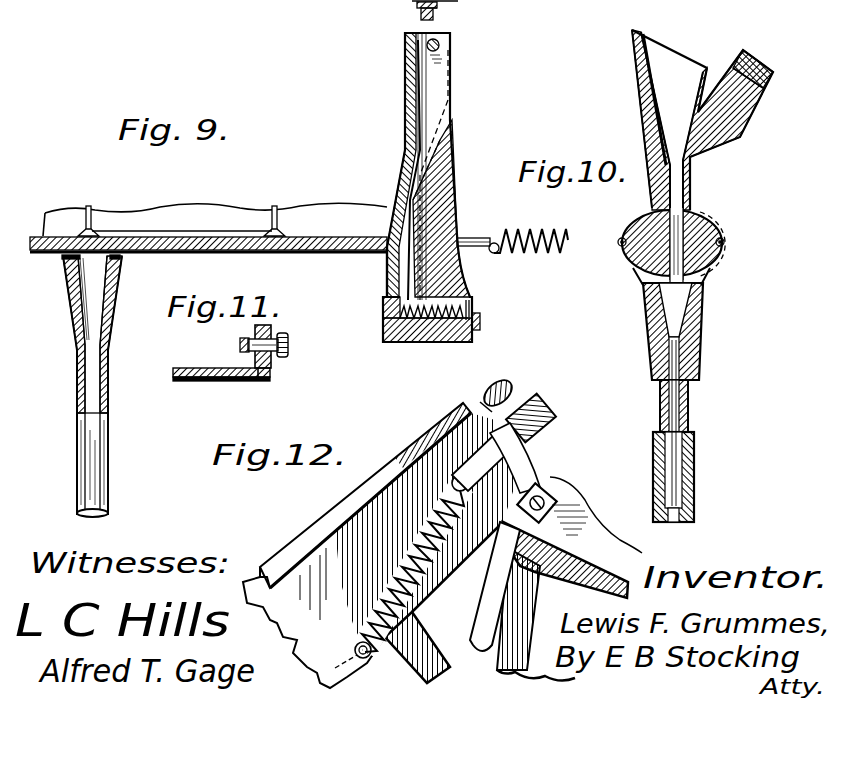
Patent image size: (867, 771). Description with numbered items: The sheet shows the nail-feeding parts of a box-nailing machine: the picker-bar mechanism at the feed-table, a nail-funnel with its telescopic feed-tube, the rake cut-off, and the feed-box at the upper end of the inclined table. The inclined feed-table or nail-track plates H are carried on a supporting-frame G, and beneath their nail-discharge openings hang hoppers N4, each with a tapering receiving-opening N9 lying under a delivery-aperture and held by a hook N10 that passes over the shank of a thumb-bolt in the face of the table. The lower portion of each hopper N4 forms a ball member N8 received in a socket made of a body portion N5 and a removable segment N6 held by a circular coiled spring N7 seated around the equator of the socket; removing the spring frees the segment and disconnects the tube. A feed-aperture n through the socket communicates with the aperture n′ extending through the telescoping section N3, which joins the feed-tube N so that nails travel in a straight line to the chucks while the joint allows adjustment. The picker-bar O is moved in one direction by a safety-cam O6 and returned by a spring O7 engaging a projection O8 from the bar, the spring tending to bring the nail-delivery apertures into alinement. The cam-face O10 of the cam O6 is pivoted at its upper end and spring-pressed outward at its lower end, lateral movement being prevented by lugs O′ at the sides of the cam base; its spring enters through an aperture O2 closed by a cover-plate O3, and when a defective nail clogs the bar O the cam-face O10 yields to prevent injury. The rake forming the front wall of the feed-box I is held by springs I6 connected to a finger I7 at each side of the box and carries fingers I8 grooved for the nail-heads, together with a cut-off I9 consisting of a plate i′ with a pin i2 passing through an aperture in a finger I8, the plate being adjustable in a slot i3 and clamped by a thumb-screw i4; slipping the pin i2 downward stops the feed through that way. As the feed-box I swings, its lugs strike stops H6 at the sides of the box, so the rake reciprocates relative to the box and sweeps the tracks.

In FIG. 9, the inclined feed-table H is at (206, 210).
In FIG. 12, the inclined feed-table H is at (560, 540).
In FIG. 9, the stops H6 is at (410, 6).
In FIG. 12, the stops H6 is at (520, 457).
In FIG. 9, the hopper N4 is at (118, 298).
In FIG. 10, the hopper N4 is at (677, 183).
In FIG. 9, the picker-bar O is at (378, 252).
In FIG. 9, the lugs O′ is at (385, 336).
In FIG. 9, the aperture O2 is at (412, 344).
In FIG. 9, the cover-plate O3 is at (481, 331).
In FIG. 9, the safety-cam O6 is at (425, 160).
In FIG. 9, the spring O7 is at (546, 232).
In FIG. 9, the projection O8 is at (491, 236).
In FIG. 9, the cam-face O10 is at (386, 298).
In FIG. 10, the tapering receiving-opening N9 is at (690, 42).
In FIG. 10, the hook N10 is at (733, 78).
In FIG. 10, the ball member N8 is at (725, 222).
In FIG. 10, the circular coiled spring N7 is at (619, 249).
In FIG. 10, the removable socket segment N6 is at (718, 271).
In FIG. 10, the socket body portion N5 is at (645, 289).
In FIG. 10, the feed-aperture n is at (690, 303).
In FIG. 10, the aperture n′ is at (688, 394).
In FIG. 10, the telescoping section N3 is at (689, 412).
In FIG. 10, the feed-tube N is at (690, 477).
In FIG. 11, the fingers I8 is at (200, 368).
In FIG. 11, the cut-off I9 is at (325, 379).
In FIG. 12, the cut-off I9 is at (481, 396).
In FIG. 11, the plate i′ is at (253, 352).
In FIG. 11, the pin i2 is at (253, 380).
In FIG. 11, the slot i3 is at (270, 328).
In FIG. 11, the thumb-screw i4 is at (289, 341).
In FIG. 12, the thumb-screw i4 is at (503, 388).
In FIG. 12, the feed-box I is at (398, 458).
In FIG. 12, the springs I6 is at (415, 617).
In FIG. 12, the finger I7 is at (440, 423).
In FIG. 12, the supporting-frame G is at (510, 573).